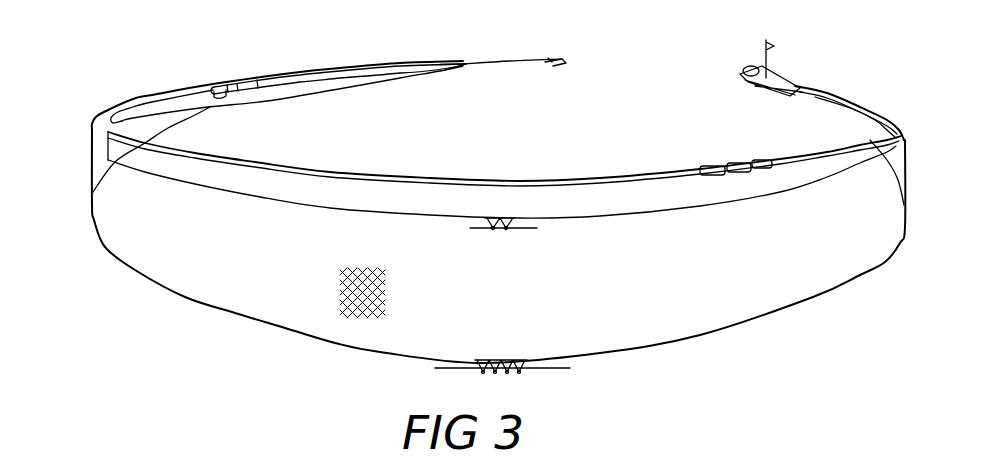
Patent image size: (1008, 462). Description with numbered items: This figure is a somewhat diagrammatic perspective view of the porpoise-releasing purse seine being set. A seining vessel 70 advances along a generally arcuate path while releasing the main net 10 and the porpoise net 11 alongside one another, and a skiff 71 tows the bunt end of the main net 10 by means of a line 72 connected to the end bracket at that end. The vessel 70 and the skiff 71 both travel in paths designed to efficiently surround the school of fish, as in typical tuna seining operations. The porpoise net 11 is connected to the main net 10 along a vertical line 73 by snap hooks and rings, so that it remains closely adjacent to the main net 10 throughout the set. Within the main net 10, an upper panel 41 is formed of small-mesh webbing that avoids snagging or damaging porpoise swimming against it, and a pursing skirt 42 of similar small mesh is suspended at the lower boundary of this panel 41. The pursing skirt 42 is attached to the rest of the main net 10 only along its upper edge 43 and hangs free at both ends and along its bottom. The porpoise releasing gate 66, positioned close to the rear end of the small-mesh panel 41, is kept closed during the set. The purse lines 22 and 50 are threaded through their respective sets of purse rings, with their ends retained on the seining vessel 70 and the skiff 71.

The main net 10 is at (318, 284).
The porpoise net 11 is at (132, 112).
The purse line 22 is at (543, 369).
The upper panel 41 is at (305, 75).
The pursing skirt 42 is at (334, 84).
The upper edge 43 is at (350, 73).
The purse line 50 is at (527, 228).
The porpoise releasing gate 66 is at (240, 78).
The seining vessel 70 is at (738, 70).
The skiff 71 is at (548, 66).
The line 72 is at (507, 66).
The vertical line 73 is at (215, 85).